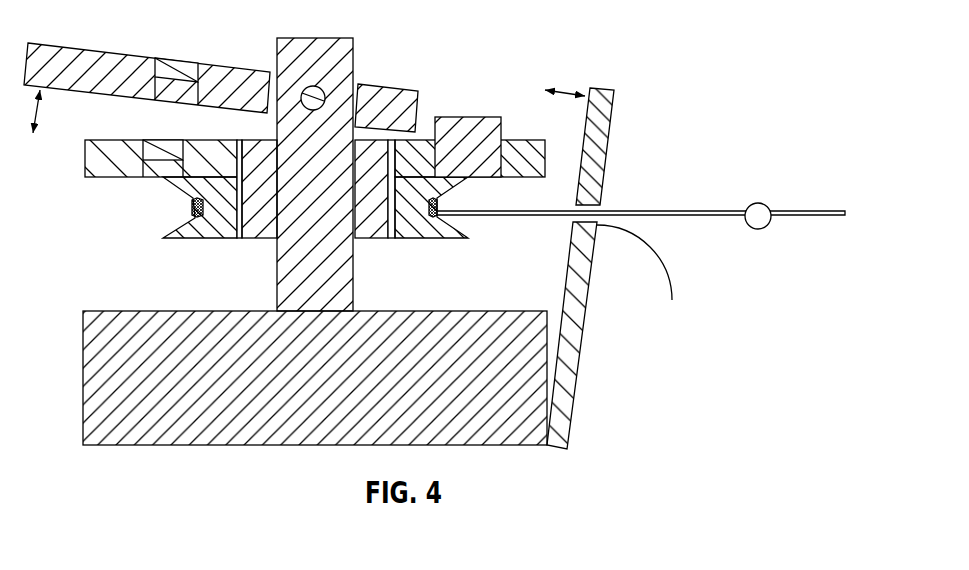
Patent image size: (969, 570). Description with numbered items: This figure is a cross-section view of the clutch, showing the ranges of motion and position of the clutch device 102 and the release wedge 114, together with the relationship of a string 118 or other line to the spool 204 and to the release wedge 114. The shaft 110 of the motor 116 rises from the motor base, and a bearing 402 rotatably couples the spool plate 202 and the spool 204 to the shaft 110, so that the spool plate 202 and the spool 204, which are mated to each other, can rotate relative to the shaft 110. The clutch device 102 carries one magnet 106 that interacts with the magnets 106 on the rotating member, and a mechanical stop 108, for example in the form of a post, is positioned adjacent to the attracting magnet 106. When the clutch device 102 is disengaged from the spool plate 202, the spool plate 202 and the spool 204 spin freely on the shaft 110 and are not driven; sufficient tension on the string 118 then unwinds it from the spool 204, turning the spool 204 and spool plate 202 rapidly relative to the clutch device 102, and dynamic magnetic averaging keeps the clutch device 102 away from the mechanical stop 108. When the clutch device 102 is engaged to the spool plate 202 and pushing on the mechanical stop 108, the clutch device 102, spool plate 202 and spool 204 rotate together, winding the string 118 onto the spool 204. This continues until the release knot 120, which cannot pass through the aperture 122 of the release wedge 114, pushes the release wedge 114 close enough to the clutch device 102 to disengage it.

The clutch device 102 is at (90, 50).
The magnet 106 is at (172, 122).
The mechanical stop 108 is at (468, 117).
The shaft 110 is at (315, 38).
The release wedge 114 is at (603, 88).
The motor 116 is at (147, 311).
The string 118 is at (650, 211).
The release knot 120 is at (760, 204).
The aperture 122 is at (644, 279).
The spool plate 202 is at (85, 158).
The spool 204 is at (178, 230).
The bearing 402 is at (372, 238).